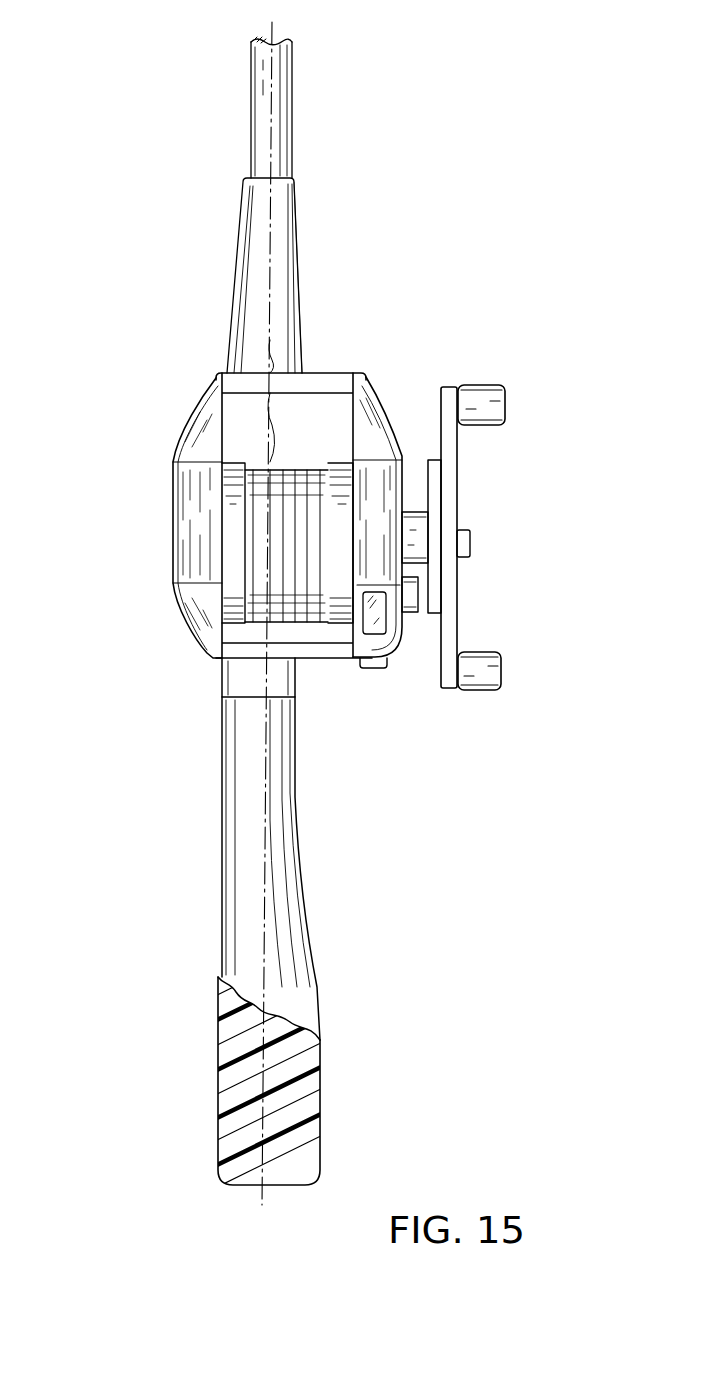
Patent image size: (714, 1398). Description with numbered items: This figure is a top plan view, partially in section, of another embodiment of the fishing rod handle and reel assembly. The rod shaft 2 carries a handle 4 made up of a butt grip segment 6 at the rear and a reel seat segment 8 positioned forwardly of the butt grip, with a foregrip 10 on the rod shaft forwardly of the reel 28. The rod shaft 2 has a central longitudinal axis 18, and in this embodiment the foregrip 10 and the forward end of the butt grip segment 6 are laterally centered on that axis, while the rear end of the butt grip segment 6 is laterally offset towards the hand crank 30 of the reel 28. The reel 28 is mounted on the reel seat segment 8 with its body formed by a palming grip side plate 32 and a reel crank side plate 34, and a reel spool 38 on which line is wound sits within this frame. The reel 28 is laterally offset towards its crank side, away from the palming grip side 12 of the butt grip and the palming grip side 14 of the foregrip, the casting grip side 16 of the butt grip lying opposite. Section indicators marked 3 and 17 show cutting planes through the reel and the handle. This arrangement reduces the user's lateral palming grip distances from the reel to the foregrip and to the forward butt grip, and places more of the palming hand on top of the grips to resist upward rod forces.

The rod shaft 2 is at (293, 83).
The handle 4 is at (301, 845).
The butt grip segment 6 is at (321, 1113).
The reel seat segment 8 is at (232, 678).
The foregrip 10 is at (301, 312).
The palming grip side 12 is at (220, 888).
The palming grip side 14 is at (232, 298).
The casting grip side 16 is at (388, 999).
The central longitudinal axis 18 is at (273, 28).
The reel 28 is at (387, 410).
The hand crank 30 is at (478, 387).
The palming grip side plate 32 is at (175, 508).
The reel crank side plate 34 is at (402, 467).
The reel spool 38 is at (312, 470).
The section line 3- 3 is at (142, 637).
The section line 17- 17 is at (215, 748).